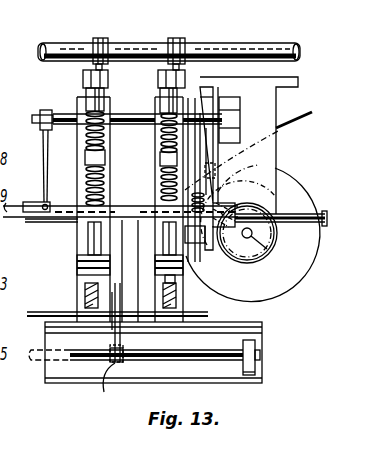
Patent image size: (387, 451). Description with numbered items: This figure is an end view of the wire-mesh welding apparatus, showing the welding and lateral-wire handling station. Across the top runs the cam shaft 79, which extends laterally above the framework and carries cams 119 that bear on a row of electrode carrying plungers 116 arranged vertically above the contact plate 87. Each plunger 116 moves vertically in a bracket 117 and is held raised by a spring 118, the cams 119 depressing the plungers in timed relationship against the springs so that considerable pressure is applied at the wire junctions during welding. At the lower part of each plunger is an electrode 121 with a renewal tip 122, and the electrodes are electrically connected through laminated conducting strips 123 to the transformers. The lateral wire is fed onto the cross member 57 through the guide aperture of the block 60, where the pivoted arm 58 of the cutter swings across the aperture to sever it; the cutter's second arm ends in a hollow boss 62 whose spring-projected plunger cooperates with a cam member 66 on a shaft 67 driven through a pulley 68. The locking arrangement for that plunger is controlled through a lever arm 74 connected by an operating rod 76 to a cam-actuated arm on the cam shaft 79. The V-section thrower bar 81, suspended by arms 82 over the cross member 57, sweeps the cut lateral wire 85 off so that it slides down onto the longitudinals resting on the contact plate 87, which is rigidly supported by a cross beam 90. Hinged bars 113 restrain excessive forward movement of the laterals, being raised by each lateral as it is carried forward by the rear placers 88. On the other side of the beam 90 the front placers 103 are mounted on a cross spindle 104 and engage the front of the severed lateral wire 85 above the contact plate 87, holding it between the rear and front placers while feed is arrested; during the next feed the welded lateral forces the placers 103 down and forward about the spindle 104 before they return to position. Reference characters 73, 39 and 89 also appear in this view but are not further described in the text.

The cam 119 is at (150, 43).
The cam shaft 79 is at (247, 48).
The electrode carrying plunger 116 is at (82, 97).
The bracket 117 is at (108, 92).
The spring 118 is at (104, 120).
The arm 82 is at (50, 158).
The operating rod 76 is at (300, 118).
The bar 73 is at (32, 117).
The arm 74 is at (158, 184).
The hinged bar 113 is at (140, 190).
The thrower bar 81 is at (38, 202).
The pivoted arm 58 is at (263, 166).
The block 60 is at (226, 204).
The disk 39 is at (325, 212).
The cross member 57 is at (54, 222).
The electrode 121 is at (88, 240).
The laminated conducting strip 123 is at (77, 266).
The hollow boss 62 is at (205, 243).
The cam member 66 is at (279, 235).
The shaft 67 is at (275, 250).
The pulley 68 is at (295, 281).
The renewal tip 122 is at (82, 302).
The front placer 103 is at (12, 332).
The cut lateral wire 85 is at (180, 332).
The contact plate 87 is at (262, 326).
The cross spindle 104 is at (263, 355).
The cross beam 90 is at (263, 372).
The rod 89 is at (35, 362).
The rear placer 88 is at (107, 343).